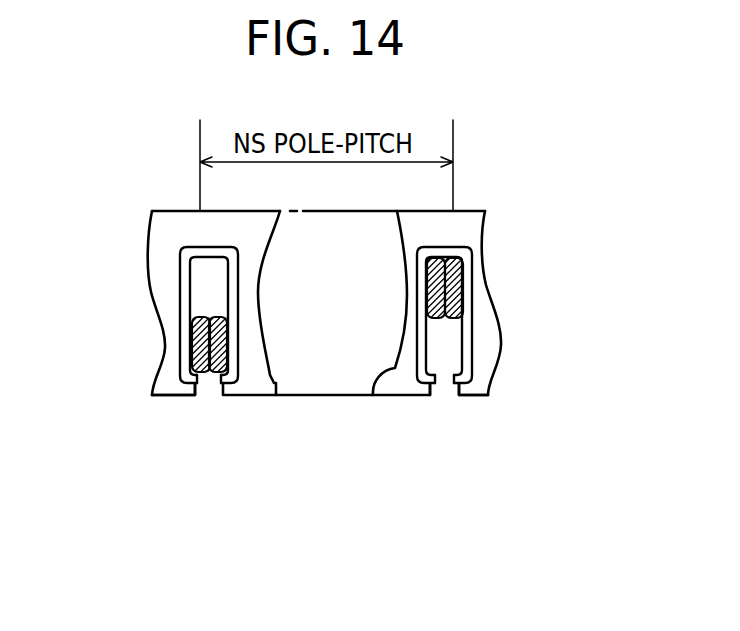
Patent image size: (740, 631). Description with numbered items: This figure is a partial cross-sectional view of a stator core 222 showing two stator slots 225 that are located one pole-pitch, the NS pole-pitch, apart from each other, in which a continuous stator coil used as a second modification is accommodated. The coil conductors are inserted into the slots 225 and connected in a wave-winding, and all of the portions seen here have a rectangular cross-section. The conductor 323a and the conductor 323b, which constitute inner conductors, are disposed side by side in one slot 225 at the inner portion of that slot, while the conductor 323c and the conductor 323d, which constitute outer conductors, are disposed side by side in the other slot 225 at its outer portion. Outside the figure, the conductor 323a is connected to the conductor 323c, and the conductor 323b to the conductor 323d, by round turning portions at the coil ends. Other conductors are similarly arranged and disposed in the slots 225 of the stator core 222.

The stator core 222 is at (473, 228).
The stator slot 225 is at (208, 393).
The conductor 323a is at (195, 330).
The conductor 323b is at (226, 373).
The conductor 323c is at (433, 303).
The conductor 323d is at (465, 290).